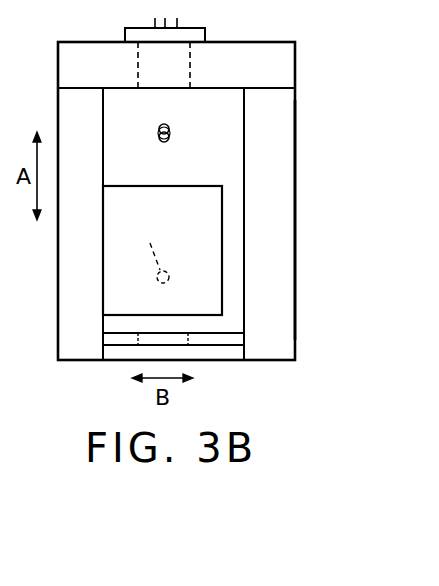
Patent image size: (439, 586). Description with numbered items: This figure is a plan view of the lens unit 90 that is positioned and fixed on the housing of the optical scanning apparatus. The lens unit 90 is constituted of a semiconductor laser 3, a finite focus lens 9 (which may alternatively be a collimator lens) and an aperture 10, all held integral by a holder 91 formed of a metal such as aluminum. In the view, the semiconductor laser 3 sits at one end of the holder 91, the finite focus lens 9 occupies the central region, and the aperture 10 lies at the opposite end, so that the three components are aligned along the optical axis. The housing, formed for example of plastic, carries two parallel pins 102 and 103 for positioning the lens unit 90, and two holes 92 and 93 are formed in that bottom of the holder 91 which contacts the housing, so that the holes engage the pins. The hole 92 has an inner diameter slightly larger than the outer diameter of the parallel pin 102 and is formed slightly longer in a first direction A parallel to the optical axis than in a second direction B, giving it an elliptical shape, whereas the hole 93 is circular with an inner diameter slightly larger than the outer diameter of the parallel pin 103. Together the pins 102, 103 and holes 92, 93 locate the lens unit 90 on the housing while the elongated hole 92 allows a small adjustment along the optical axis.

The semiconductor laser 3 is at (205, 33).
The finite focus lens 9 is at (210, 218).
The aperture 10 is at (228, 340).
The lens unit 90 is at (308, 142).
The holder 91 is at (284, 170).
The hole 92 is at (162, 144).
The hole 93 is at (144, 245).
The parallel pin 102 is at (170, 130).
The parallel pin 103 is at (167, 283).